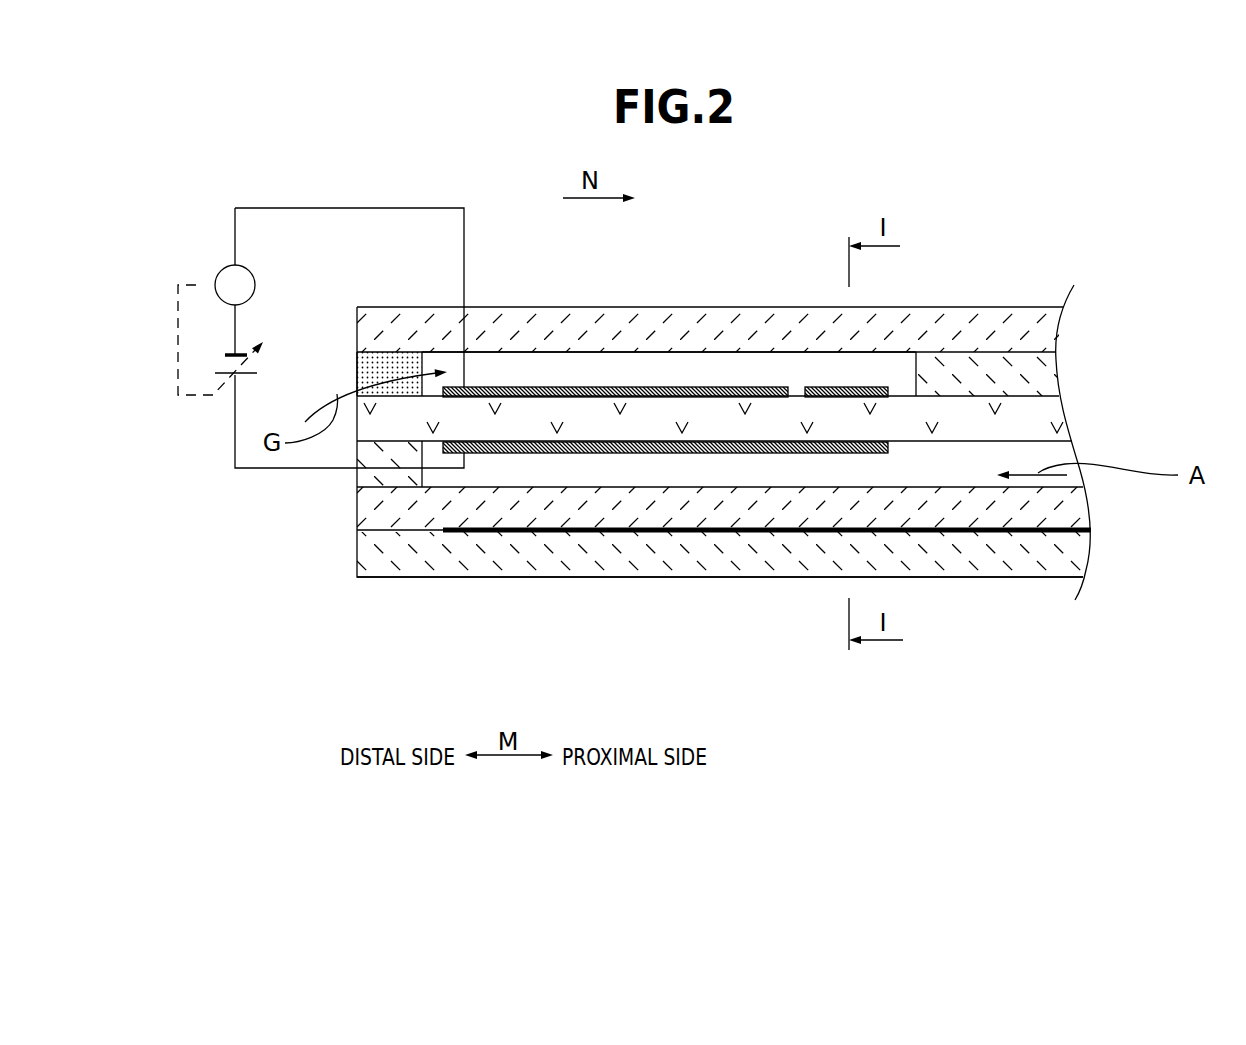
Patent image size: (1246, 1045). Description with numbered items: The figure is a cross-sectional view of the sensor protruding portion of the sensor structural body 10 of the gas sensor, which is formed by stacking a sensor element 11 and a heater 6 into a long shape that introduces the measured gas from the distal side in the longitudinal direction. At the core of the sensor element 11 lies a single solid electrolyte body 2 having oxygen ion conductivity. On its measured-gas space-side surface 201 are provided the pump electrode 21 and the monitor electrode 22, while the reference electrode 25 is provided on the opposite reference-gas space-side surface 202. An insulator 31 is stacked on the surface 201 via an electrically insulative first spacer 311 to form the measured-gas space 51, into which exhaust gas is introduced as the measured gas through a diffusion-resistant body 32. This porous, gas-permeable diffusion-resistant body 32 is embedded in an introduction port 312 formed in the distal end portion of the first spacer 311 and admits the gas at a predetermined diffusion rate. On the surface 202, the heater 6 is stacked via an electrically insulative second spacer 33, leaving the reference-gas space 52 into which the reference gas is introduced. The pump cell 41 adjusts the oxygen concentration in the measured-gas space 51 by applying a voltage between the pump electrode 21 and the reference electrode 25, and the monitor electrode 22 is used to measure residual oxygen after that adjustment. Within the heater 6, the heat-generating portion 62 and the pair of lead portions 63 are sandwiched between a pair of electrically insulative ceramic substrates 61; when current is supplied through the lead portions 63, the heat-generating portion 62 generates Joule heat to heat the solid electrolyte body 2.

The pump cell 41 is at (216, 228).
The sensor structural body 10 is at (1092, 250).
The sensor element 11 is at (933, 299).
The insulator 31 is at (488, 322).
The diffusion-resistant body 32 is at (385, 352).
The introduction port 312 is at (357, 368).
The first spacer 311 is at (1010, 372).
The measured-gas space 51 is at (740, 372).
The pump electrode 21 is at (535, 387).
The monitor electrode 22 is at (838, 387).
The solid electrolyte body 2 is at (643, 423).
The measured-gas space-side surface 201 is at (1038, 398).
The reference-gas space-side surface 202 is at (1020, 441).
The reference electrode 25 is at (733, 455).
The second spacer 33 is at (397, 476).
The reference-gas space 52 is at (610, 466).
The heater 6 is at (790, 586).
The heat-generating portion 62 is at (640, 535).
The lead portions 63 is at (1012, 536).
The ceramic substrates 61 is at (960, 508).